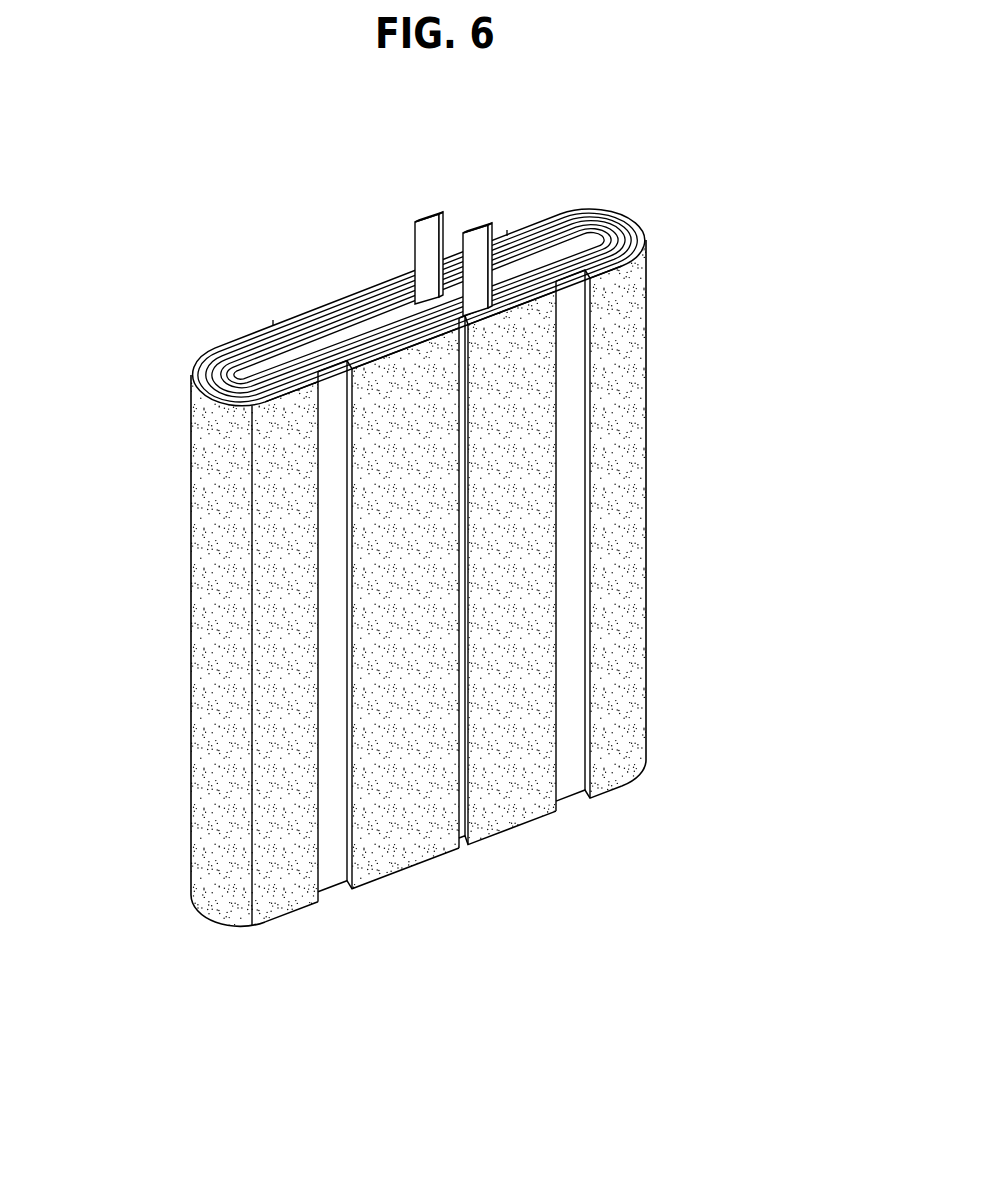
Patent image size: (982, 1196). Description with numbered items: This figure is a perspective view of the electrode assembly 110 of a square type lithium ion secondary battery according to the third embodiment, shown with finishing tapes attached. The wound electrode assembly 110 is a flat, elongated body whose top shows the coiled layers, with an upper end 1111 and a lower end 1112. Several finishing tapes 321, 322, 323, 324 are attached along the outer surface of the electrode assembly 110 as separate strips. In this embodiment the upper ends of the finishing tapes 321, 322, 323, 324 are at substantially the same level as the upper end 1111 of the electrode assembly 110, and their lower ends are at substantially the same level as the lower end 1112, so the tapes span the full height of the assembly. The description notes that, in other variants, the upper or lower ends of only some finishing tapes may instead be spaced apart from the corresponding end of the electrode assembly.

The electrode assembly 110 is at (266, 348).
The upper end of the electrode assembly 1111 is at (597, 230).
The lower end of the electrode assembly 1112 is at (332, 875).
The finishing tape 321 is at (512, 805).
The finishing tape 322 is at (200, 570).
The finishing tape 323 is at (363, 293).
The finishing tape 324 is at (628, 443).